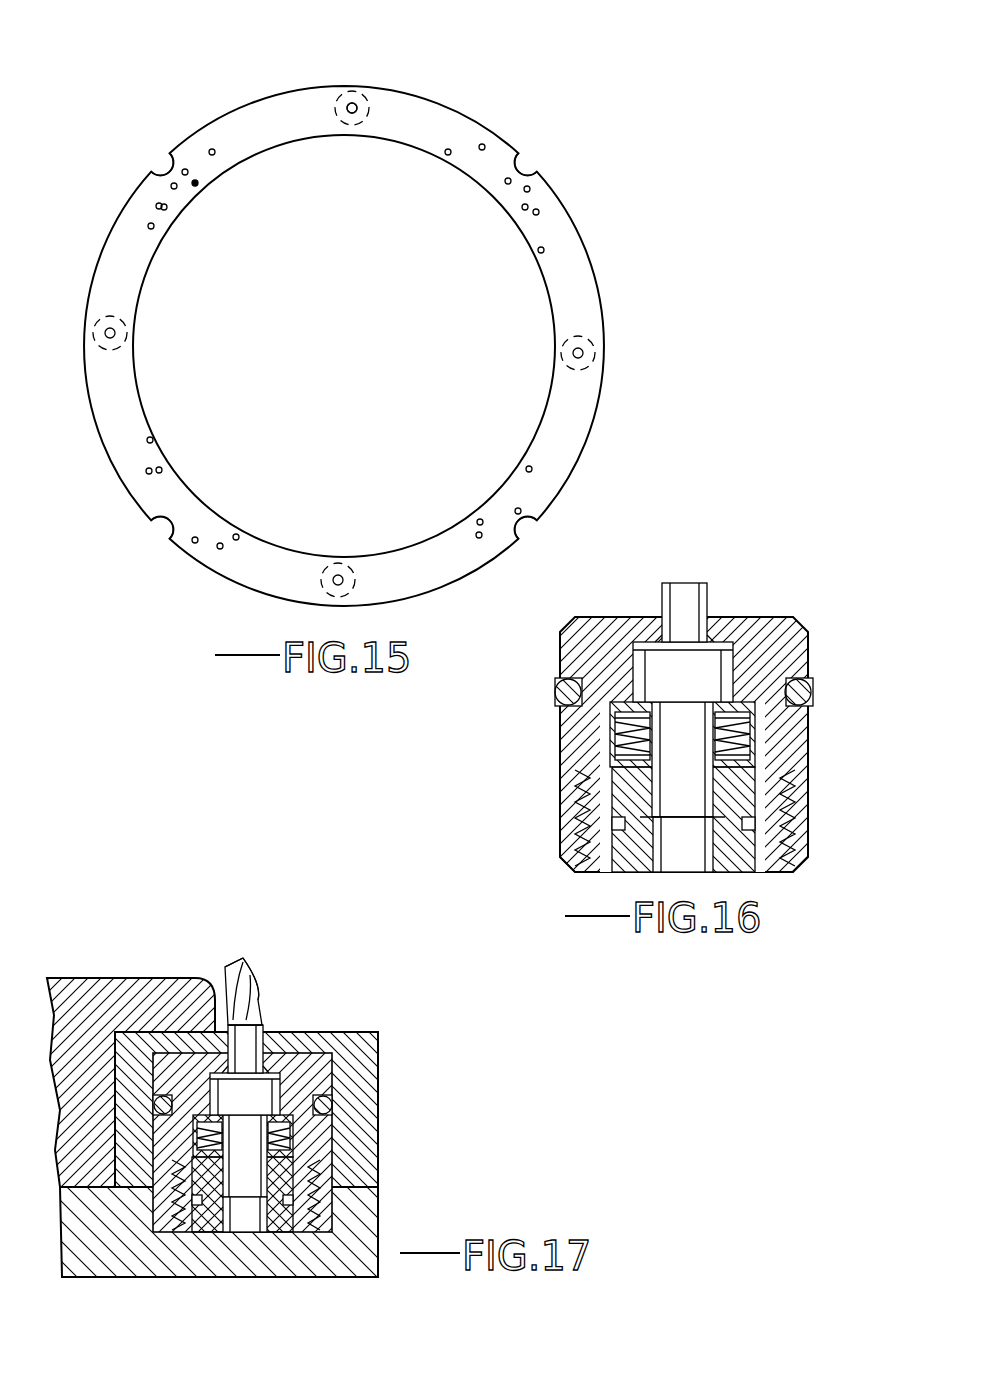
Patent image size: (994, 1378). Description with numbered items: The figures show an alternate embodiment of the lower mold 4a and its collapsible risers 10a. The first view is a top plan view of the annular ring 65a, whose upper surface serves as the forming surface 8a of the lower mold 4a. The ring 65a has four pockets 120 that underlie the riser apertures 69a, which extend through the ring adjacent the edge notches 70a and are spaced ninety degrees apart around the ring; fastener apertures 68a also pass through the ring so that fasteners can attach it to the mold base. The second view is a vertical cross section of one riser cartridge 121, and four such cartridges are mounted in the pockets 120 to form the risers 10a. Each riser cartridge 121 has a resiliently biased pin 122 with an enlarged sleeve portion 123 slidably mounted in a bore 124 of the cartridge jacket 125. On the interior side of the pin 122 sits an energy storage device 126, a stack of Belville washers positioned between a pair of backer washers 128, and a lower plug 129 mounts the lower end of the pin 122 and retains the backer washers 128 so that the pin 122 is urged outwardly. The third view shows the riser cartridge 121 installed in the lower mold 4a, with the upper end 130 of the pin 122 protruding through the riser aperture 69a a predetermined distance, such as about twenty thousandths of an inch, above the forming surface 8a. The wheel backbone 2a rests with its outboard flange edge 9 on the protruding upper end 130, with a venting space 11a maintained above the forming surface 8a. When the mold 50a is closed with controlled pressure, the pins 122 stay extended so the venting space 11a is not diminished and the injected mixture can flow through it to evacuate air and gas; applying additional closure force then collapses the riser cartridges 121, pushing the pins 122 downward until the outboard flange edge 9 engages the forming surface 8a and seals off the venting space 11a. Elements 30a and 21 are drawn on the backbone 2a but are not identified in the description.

In FIG. 15, the annular ring 65a is at (247, 126).
In FIG. 15, the pockets 120 is at (366, 92).
In FIG. 15, the edge notches 70a is at (165, 158).
In FIG. 15, the riser apertures 69a is at (354, 115).
In FIG. 15, the fastener apertures 68a is at (536, 212).
In FIG. 15, the forming surface 8a is at (578, 418).
In FIG. 17, the forming surface 8a is at (360, 1030).
In FIG. 16, the upper end of pin 130 is at (673, 582).
In FIG. 16, the resiliently biased pin 122 is at (705, 598).
In FIG. 17, the resiliently biased pin 122 is at (235, 1058).
In FIG. 16, the riser cartridge 121 is at (745, 656).
In FIG. 17, the riser cartridge 121 is at (322, 1083).
In FIG. 16, the enlarged sleeve portion 123 is at (740, 662).
In FIG. 17, the enlarged sleeve portion 123 is at (245, 1097).
In FIG. 16, the bore 124 is at (742, 690).
In FIG. 16, the backer washers 128 is at (748, 712).
In FIG. 16, the energy storage device 126 is at (727, 744).
In FIG. 16, the cartridge jacket 125 is at (558, 812).
In FIG. 16, the lower plug 129 is at (598, 866).
In FIG. 16, the riser 10a is at (772, 878).
In FIG. 17, the riser 10a is at (282, 1240).
In FIG. 17, the mold 50a is at (68, 972).
In FIG. 17, the pawl 30a is at (232, 965).
In FIG. 17, the wheel backbone 2a is at (252, 968).
In FIG. 17, the pawl tip 21 is at (255, 990).
In FIG. 17, the venting space 11a is at (268, 1014).
In FIG. 17, the outboard flange edge 9 is at (230, 1055).
In FIG. 17, the lower mold 4a is at (125, 1252).